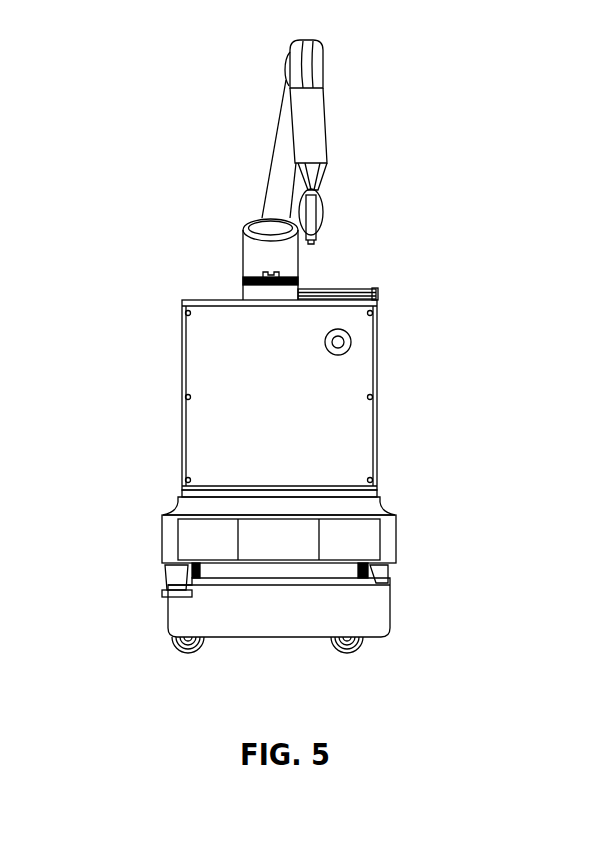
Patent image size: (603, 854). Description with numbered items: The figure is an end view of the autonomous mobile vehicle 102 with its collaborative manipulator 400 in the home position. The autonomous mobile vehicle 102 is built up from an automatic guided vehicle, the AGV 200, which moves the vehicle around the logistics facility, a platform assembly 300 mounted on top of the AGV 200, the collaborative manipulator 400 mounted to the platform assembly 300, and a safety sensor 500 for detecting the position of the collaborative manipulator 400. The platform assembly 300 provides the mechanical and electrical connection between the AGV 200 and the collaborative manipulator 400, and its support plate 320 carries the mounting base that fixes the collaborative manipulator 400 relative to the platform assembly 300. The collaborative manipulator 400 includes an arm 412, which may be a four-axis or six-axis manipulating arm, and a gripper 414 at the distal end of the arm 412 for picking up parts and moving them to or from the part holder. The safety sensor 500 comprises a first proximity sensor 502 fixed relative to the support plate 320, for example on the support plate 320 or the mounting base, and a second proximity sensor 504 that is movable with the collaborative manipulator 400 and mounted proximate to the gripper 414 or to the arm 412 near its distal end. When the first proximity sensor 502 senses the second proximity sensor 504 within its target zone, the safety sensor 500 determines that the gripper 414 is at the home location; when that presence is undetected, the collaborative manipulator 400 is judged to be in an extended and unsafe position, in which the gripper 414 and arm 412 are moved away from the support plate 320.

The autonomous mobile vehicle 102 is at (462, 207).
The automatic guided vehicle (AGV) 200 is at (432, 547).
The platform assembly 300 is at (406, 401).
The support plate 320 is at (212, 300).
The collaborative manipulator 400 is at (246, 126).
The arm 412 is at (277, 183).
The gripper 414 is at (318, 232).
The safety sensor 500 is at (306, 274).
The first proximity sensor 502 is at (270, 270).
The second proximity sensor 504 is at (302, 185).